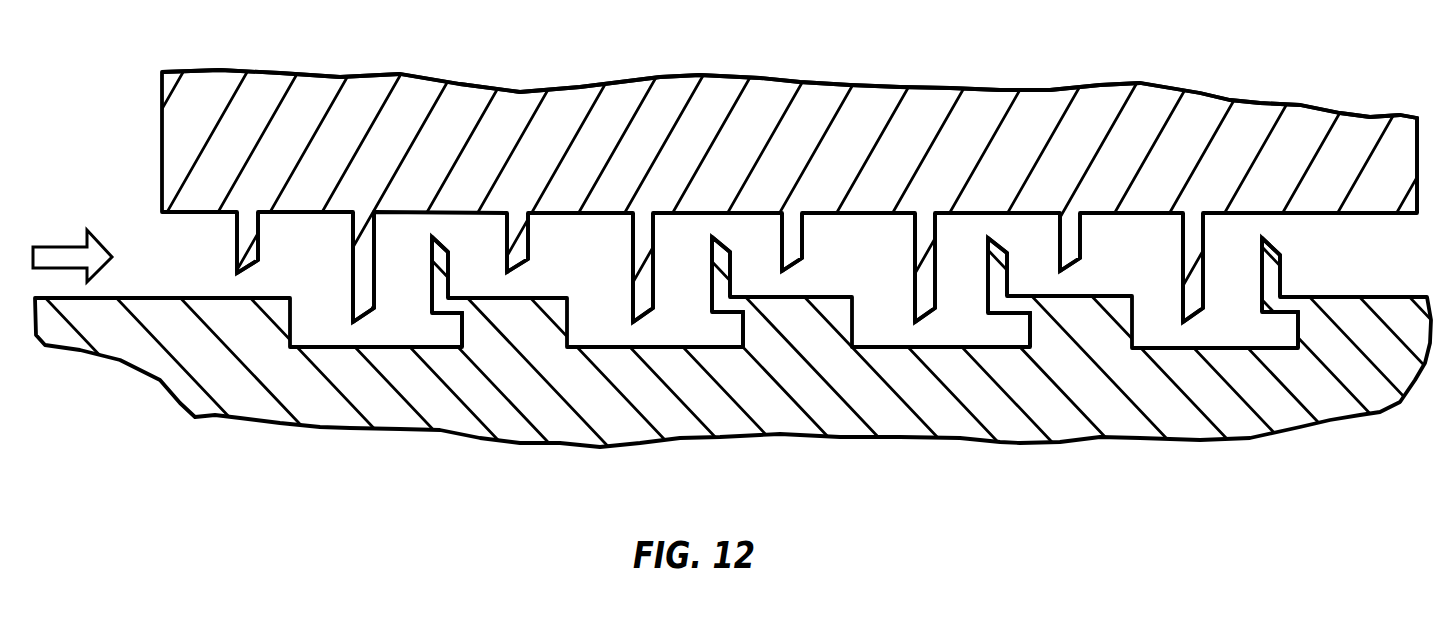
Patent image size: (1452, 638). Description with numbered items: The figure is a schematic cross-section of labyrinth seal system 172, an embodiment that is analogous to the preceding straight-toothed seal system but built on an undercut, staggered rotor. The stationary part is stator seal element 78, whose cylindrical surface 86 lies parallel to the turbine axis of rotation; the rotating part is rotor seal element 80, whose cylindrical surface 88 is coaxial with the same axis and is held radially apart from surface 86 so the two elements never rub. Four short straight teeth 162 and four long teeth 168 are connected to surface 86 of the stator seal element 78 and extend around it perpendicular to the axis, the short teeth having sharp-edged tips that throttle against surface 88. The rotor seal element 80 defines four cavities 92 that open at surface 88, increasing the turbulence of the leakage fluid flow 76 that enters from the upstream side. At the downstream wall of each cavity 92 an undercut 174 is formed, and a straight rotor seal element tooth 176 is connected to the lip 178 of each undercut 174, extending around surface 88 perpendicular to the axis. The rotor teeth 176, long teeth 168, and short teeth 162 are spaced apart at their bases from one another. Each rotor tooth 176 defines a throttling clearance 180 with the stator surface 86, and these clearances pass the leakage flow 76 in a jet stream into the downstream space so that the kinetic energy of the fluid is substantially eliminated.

The seal system 172 is at (122, 72).
The stator seal element 78 is at (180, 148).
The rotor seal element 80 is at (108, 342).
The fluid flow 76 is at (58, 250).
The cylindrical surface 86 is at (190, 213).
The cylindrical surface 88 is at (219, 298).
The short straight teeth 162 is at (252, 227).
The throttling clearances 180 is at (803, 267).
The long teeth 168 is at (353, 275).
The rotor seal element teeth 176 is at (440, 275).
The lips 178 is at (431, 315).
The undercuts 174 is at (445, 335).
The cavities 92 is at (339, 333).